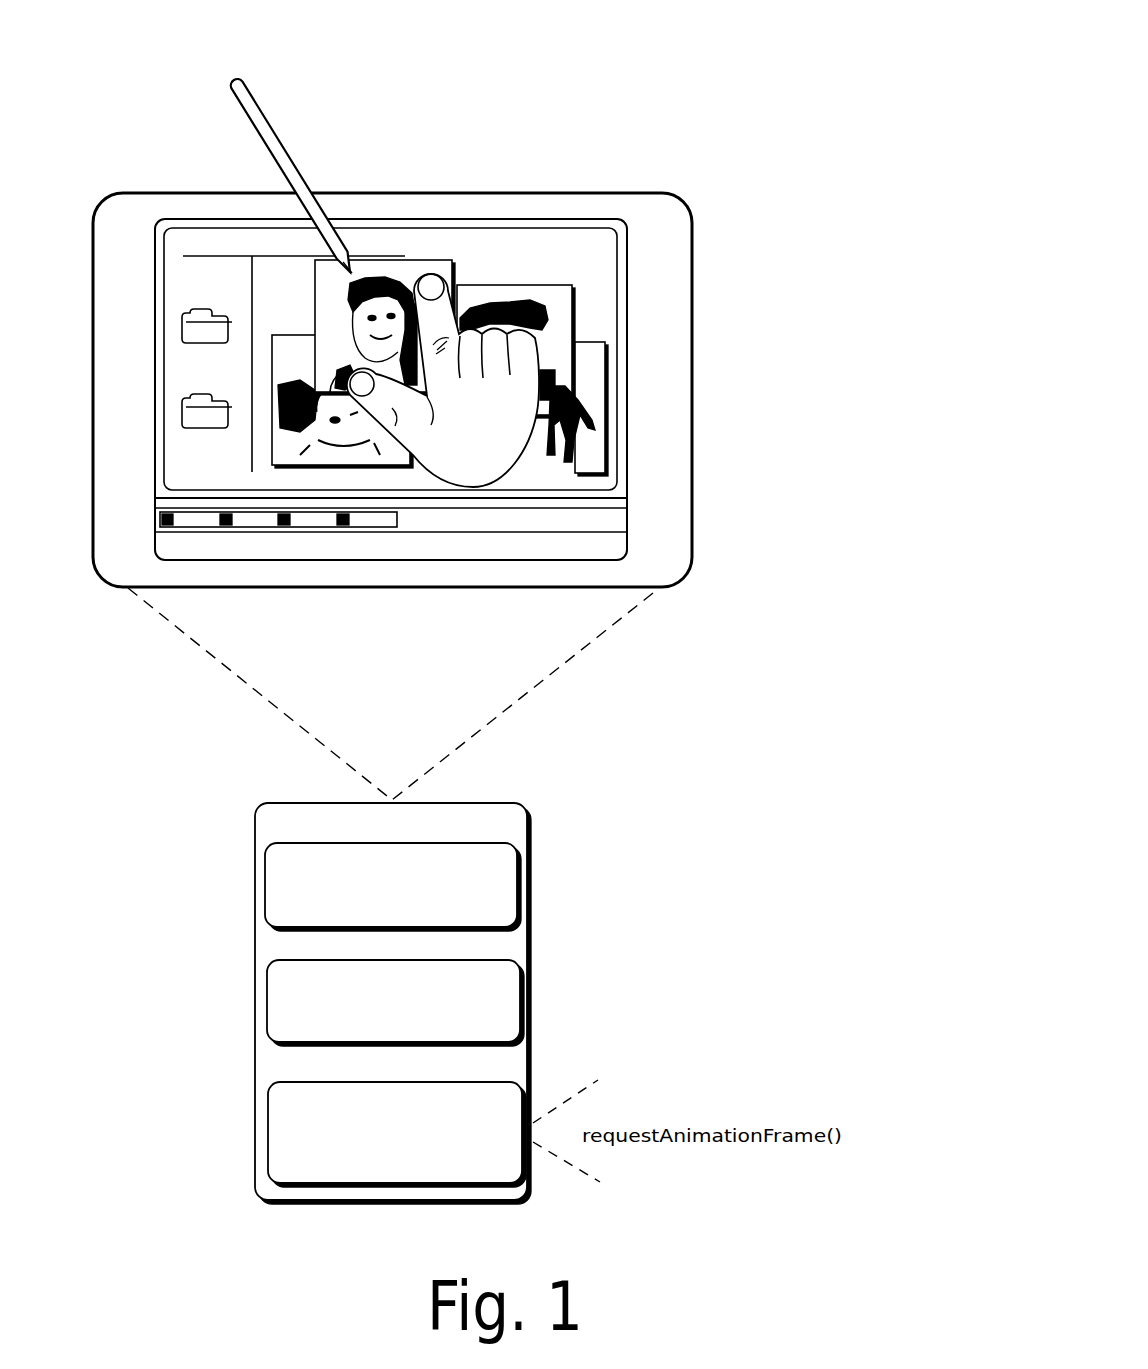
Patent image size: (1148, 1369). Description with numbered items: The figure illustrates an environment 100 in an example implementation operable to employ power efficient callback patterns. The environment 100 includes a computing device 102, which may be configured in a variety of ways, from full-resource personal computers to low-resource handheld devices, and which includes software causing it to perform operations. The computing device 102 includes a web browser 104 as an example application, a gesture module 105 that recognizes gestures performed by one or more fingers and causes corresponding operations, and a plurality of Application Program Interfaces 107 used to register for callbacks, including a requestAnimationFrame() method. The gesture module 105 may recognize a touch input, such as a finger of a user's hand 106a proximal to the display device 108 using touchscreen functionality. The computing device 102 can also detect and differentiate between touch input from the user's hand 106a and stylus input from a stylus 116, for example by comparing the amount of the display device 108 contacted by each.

The environment 100 is at (796, 58).
The computing device 102 is at (507, 834).
The web browser 104 is at (413, 904).
The gesture module 105 is at (418, 1019).
The Application Program Interfaces 107 is at (417, 1169).
The display device 108 is at (602, 256).
The user's hand 106a is at (507, 469).
The stylus 116 is at (242, 75).